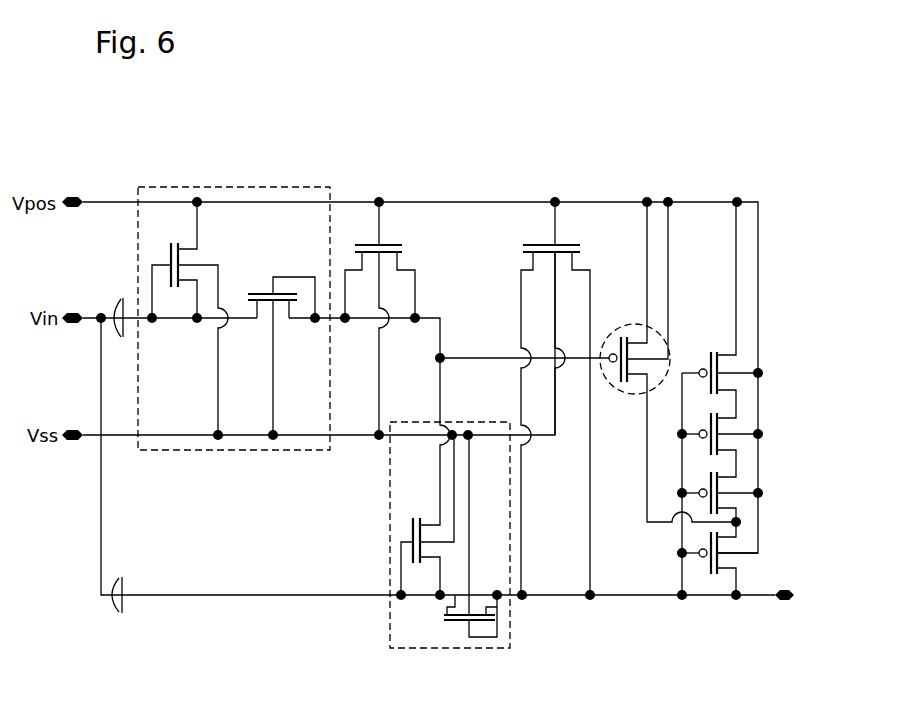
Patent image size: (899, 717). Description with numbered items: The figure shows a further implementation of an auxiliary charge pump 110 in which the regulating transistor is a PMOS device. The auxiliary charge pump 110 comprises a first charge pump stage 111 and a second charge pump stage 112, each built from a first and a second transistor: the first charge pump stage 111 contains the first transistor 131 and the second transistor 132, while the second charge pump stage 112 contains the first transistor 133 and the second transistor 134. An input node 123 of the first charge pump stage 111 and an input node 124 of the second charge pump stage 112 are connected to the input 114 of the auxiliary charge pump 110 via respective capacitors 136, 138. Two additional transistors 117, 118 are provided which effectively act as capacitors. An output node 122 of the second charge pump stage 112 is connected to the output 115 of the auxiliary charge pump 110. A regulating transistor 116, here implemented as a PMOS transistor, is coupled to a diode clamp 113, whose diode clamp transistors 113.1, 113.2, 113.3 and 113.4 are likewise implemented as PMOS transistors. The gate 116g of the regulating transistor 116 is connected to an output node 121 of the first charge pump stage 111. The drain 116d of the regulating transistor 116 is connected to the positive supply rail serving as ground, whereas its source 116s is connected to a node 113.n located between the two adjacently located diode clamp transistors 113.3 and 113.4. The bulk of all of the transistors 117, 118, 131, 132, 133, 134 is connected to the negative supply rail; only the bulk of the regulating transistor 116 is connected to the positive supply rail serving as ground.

The auxiliary charge pump 110 is at (234, 297).
The first charge pump stage 111 is at (252, 187).
The second charge pump stage 112 is at (427, 471).
The diode clamp 113 is at (751, 370).
The diode clamp transistor 113.1 is at (731, 367).
The diode clamp transistor 113.2 is at (731, 428).
The diode clamp transistor 113.3 is at (731, 488).
The diode clamp transistor 113.4 is at (731, 547).
The node 113.n is at (741, 521).
The input 114 is at (78, 312).
The output 115 is at (780, 606).
The regulating transistor 116 is at (656, 398).
The gate 116g is at (577, 356).
The drain 116d is at (648, 248).
The source 116s is at (648, 555).
The additional transistor 117 is at (410, 262).
The additional transistor 118 is at (524, 259).
The output node 121 is at (442, 352).
The output node 122 is at (523, 601).
The input node 123 is at (218, 440).
The input node 124 is at (392, 598).
The first transistor 131 is at (163, 246).
The second transistor 132 is at (262, 317).
The first transistor 133 is at (398, 522).
The second transistor 134 is at (458, 629).
The capacitor 136 is at (118, 299).
The capacitor 138 is at (123, 600).